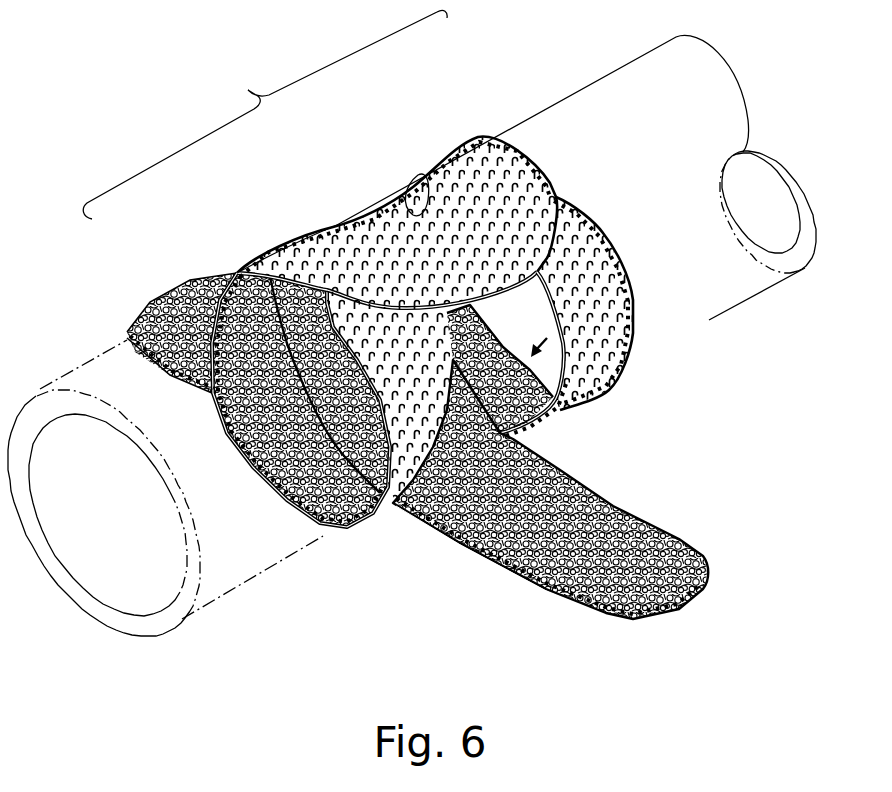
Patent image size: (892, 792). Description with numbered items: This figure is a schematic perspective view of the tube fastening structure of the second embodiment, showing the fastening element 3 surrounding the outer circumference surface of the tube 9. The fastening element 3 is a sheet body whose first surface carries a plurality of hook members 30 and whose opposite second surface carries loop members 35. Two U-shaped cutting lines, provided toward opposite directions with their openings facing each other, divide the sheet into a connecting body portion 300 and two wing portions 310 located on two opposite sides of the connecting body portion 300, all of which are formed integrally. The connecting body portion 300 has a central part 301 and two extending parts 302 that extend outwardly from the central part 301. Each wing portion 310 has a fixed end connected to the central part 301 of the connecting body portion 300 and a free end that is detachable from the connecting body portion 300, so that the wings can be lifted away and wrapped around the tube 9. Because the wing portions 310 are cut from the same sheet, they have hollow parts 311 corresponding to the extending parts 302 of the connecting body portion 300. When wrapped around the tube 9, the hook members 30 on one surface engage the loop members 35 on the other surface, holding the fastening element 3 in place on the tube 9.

The fastening element 3 is at (265, 114).
The tube 9 is at (77, 393).
The hook members 30 is at (460, 150).
The loop members 35 is at (203, 277).
The connecting body portion 300 is at (170, 293).
The central part 301 is at (307, 495).
The extending parts 302 is at (460, 554).
The wing portions 310 is at (520, 170).
The hollow parts 311 is at (585, 403).